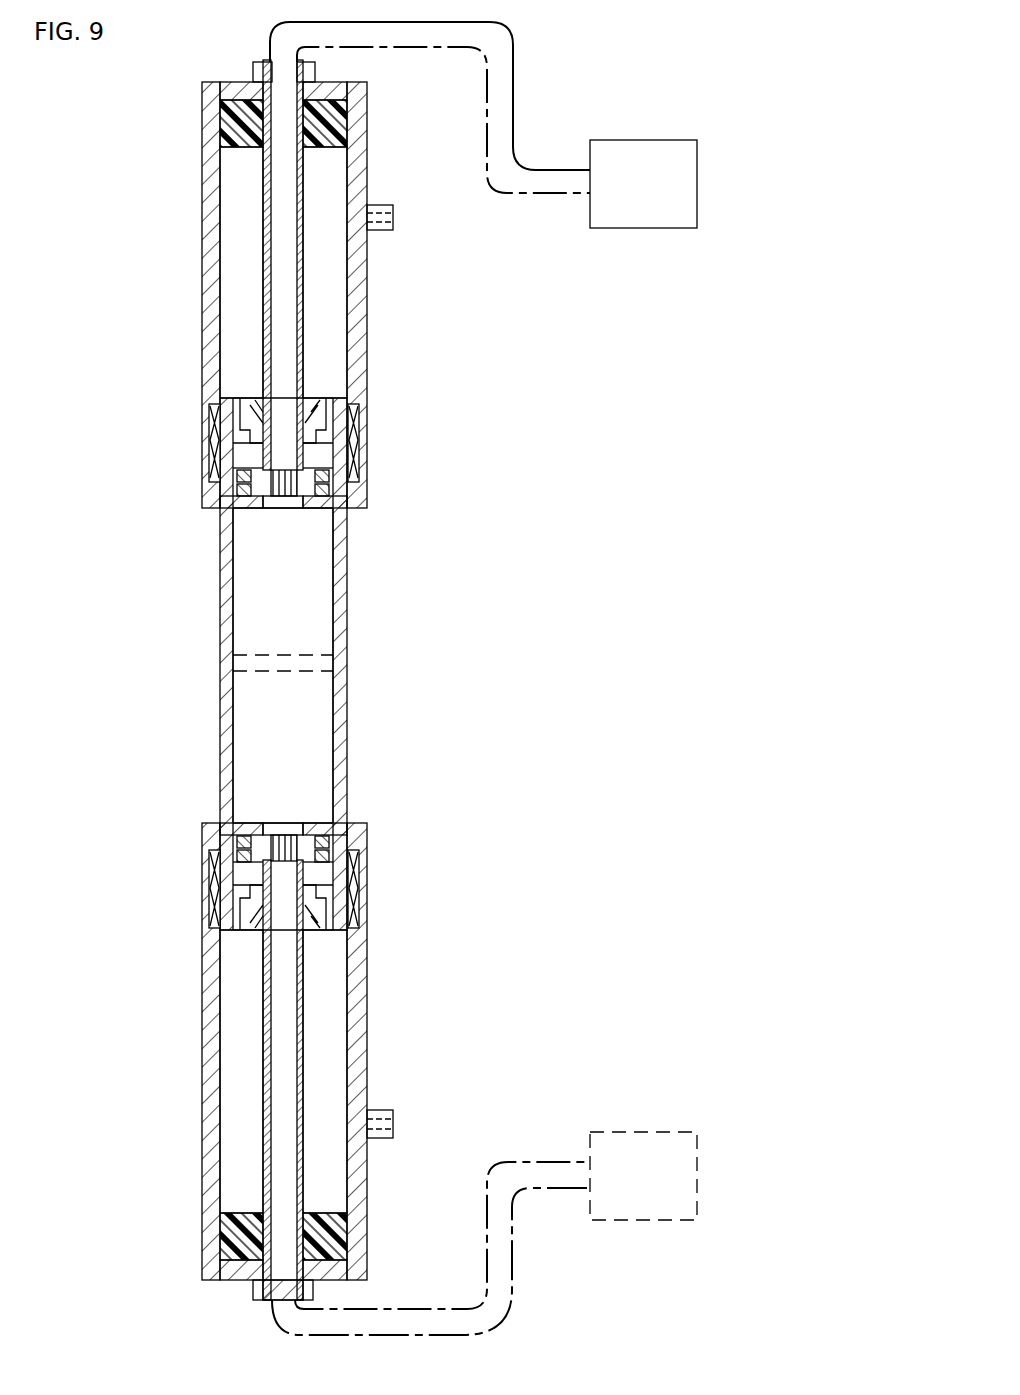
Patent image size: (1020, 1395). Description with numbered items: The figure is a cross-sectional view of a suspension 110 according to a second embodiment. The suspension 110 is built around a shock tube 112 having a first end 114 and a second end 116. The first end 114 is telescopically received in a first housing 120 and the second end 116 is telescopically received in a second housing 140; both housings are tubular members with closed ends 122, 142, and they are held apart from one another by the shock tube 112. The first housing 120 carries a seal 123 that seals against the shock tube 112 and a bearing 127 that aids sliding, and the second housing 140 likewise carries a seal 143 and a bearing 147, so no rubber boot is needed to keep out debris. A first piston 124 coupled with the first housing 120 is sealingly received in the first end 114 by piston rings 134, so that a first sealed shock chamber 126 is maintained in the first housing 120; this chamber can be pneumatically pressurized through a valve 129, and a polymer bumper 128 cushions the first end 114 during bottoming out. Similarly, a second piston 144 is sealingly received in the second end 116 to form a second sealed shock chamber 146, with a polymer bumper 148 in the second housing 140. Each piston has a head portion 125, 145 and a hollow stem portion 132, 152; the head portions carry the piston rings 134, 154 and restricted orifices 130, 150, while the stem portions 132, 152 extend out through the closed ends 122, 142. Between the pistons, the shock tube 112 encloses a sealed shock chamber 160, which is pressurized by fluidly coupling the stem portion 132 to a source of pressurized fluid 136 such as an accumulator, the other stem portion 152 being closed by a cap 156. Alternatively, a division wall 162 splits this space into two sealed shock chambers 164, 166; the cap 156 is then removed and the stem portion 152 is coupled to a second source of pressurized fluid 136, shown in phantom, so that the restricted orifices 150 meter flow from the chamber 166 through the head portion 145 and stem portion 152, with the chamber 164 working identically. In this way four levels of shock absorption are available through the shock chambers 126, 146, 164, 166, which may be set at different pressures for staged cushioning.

The suspension 110 is at (118, 188).
The shock tube 112 is at (226, 714).
The first end 114 is at (226, 411).
The second end 116 is at (226, 879).
The first housing 120 is at (357, 276).
The closed end 122 is at (232, 92).
The seal 123 is at (345, 470).
The first piston 124 is at (230, 545).
The head portion 125 is at (245, 508).
The first sealed shock chamber 126 is at (240, 267).
The bearing 127 is at (352, 428).
The polymer bumper 128 is at (226, 122).
The valve 129 is at (394, 215).
The restricted orifices 130 is at (282, 505).
The stem portion 132 is at (266, 318).
The piston rings 134 is at (330, 485).
The source of pressurized fluid 136 is at (682, 176).
The second housing 140 is at (357, 1041).
The closed end 142 is at (345, 1266).
The seal 143 is at (345, 850).
The second piston 144 is at (230, 790).
The head portion 145 is at (245, 823).
The second sealed shock chamber 146 is at (330, 994).
The bearing 147 is at (350, 882).
The polymer bumper 148 is at (328, 1226).
The restricted orifices 150 is at (283, 823).
The stem portion 152 is at (266, 1046).
The piston rings 154 is at (334, 836).
The cap 156 is at (280, 1294).
The sealed shock chamber 160 is at (243, 640).
The division wall 162 is at (248, 662).
The sealed shock chamber 164 is at (318, 590).
The sealed shock chamber 166 is at (310, 678).